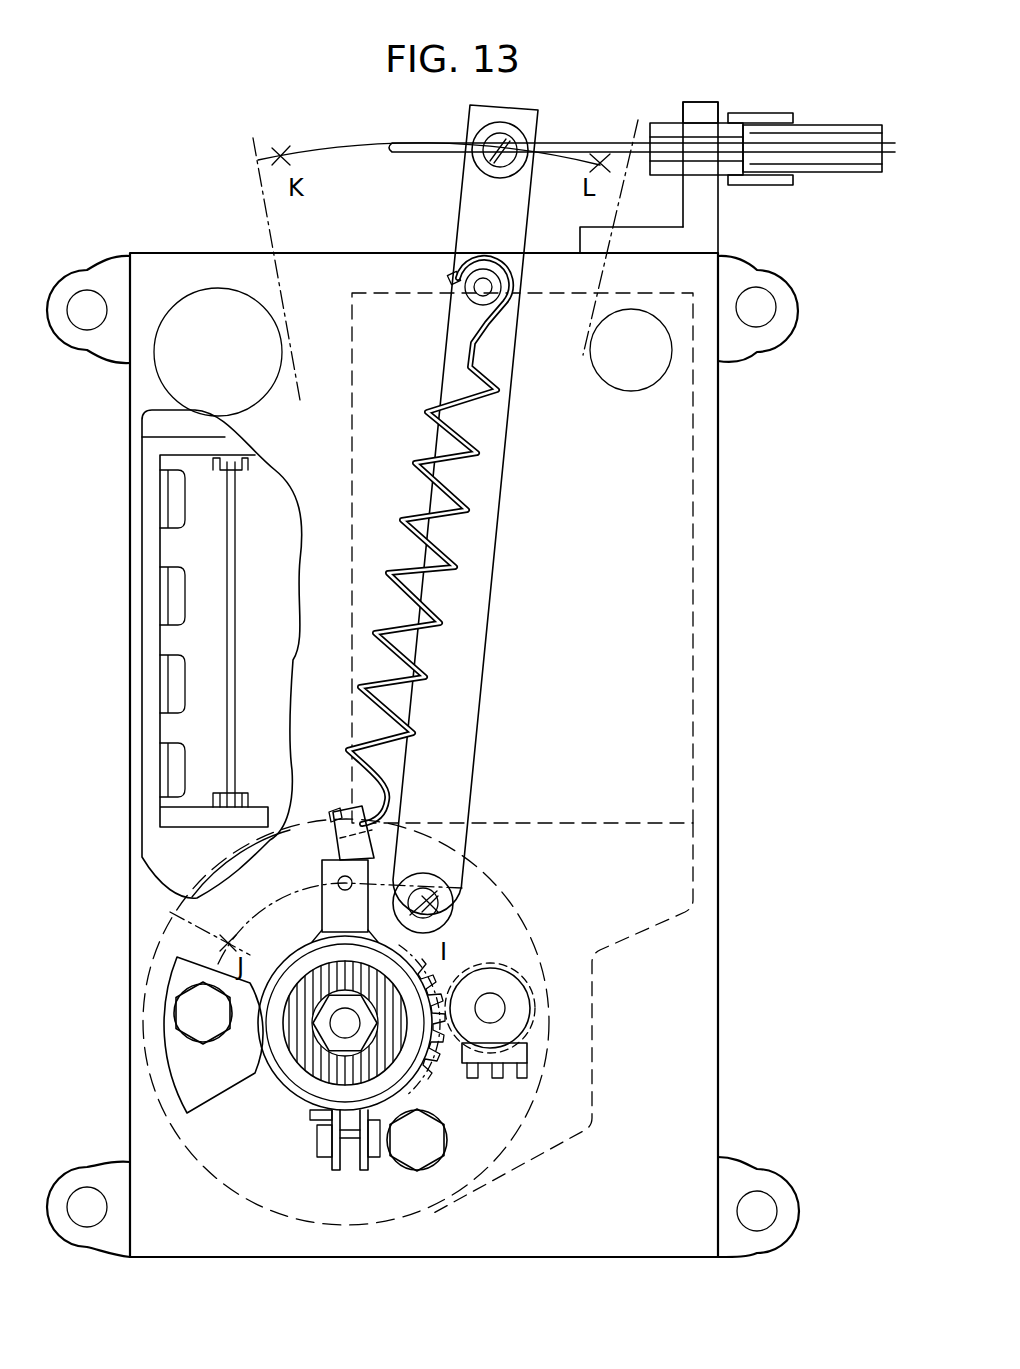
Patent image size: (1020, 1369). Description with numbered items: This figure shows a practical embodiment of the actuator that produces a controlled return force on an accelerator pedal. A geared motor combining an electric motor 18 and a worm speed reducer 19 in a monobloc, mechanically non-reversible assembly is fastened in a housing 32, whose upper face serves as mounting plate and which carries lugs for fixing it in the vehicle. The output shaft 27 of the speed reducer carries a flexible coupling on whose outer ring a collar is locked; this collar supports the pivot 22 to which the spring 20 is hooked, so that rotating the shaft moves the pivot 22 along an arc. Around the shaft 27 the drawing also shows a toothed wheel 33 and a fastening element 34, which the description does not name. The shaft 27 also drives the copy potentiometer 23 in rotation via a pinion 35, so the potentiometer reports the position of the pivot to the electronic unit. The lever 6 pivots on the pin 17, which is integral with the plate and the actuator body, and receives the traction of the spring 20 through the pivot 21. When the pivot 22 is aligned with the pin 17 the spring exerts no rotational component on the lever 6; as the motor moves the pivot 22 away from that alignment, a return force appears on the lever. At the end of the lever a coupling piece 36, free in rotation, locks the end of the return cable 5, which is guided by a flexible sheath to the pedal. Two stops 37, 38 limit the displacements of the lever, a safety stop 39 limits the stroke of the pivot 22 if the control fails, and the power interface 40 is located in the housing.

The return cable 5 is at (880, 150).
The lever 6 is at (495, 522).
The pin 17 is at (452, 896).
The electric motor 18 is at (693, 495).
The worm speed reducer 19 is at (420, 1220).
The spring 20 is at (470, 620).
The pivot 21 is at (470, 282).
The pivot 22 is at (338, 883).
The copy potentiometer 23 is at (528, 1050).
The output shaft 27 is at (338, 1035).
The housing 32 is at (718, 1088).
The sector gear wheel 33 is at (322, 975).
The clamp bolt 34 is at (305, 1115).
The pinion 35 is at (512, 975).
The coupling piece 36 is at (512, 124).
The stop 37 is at (628, 392).
The stop 38 is at (218, 290).
The safety stop 39 is at (185, 1072).
The power interface 40 is at (170, 634).